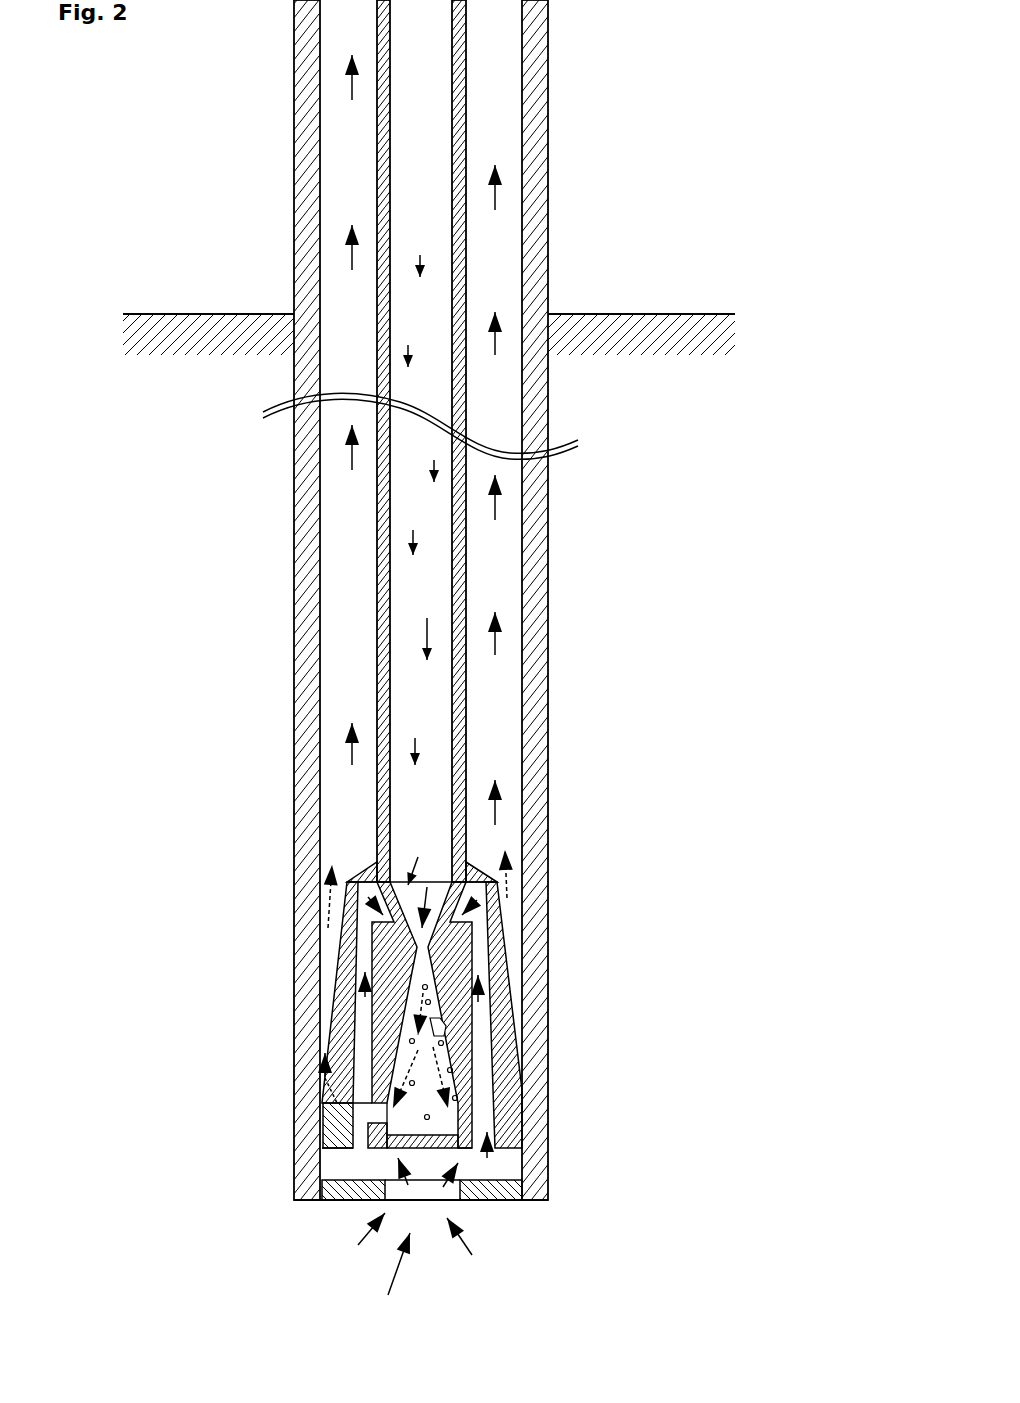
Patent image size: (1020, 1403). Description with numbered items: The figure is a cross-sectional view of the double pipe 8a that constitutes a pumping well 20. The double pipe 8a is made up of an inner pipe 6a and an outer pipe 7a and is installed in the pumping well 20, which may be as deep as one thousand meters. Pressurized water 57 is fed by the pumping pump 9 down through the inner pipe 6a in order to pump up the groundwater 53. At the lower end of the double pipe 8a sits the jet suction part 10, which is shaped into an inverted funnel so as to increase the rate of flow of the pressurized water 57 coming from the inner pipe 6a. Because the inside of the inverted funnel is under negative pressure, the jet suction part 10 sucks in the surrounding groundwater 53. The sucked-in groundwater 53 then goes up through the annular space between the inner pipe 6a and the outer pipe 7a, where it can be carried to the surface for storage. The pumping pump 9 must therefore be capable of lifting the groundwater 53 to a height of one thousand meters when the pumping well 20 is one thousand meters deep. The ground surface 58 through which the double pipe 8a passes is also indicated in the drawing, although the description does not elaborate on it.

The pumping well 20 is at (394, 660).
The double pipe 8a is at (299, 600).
The inner pipe 6a is at (376, 530).
The outer pipe 7a is at (296, 588).
The pressurized water 57 is at (427, 633).
The ground surface 58 is at (697, 314).
The groundwater 53 is at (548, 810).
The pumping pump 9 is at (340, 948).
The jet suction part 10 is at (430, 1020).